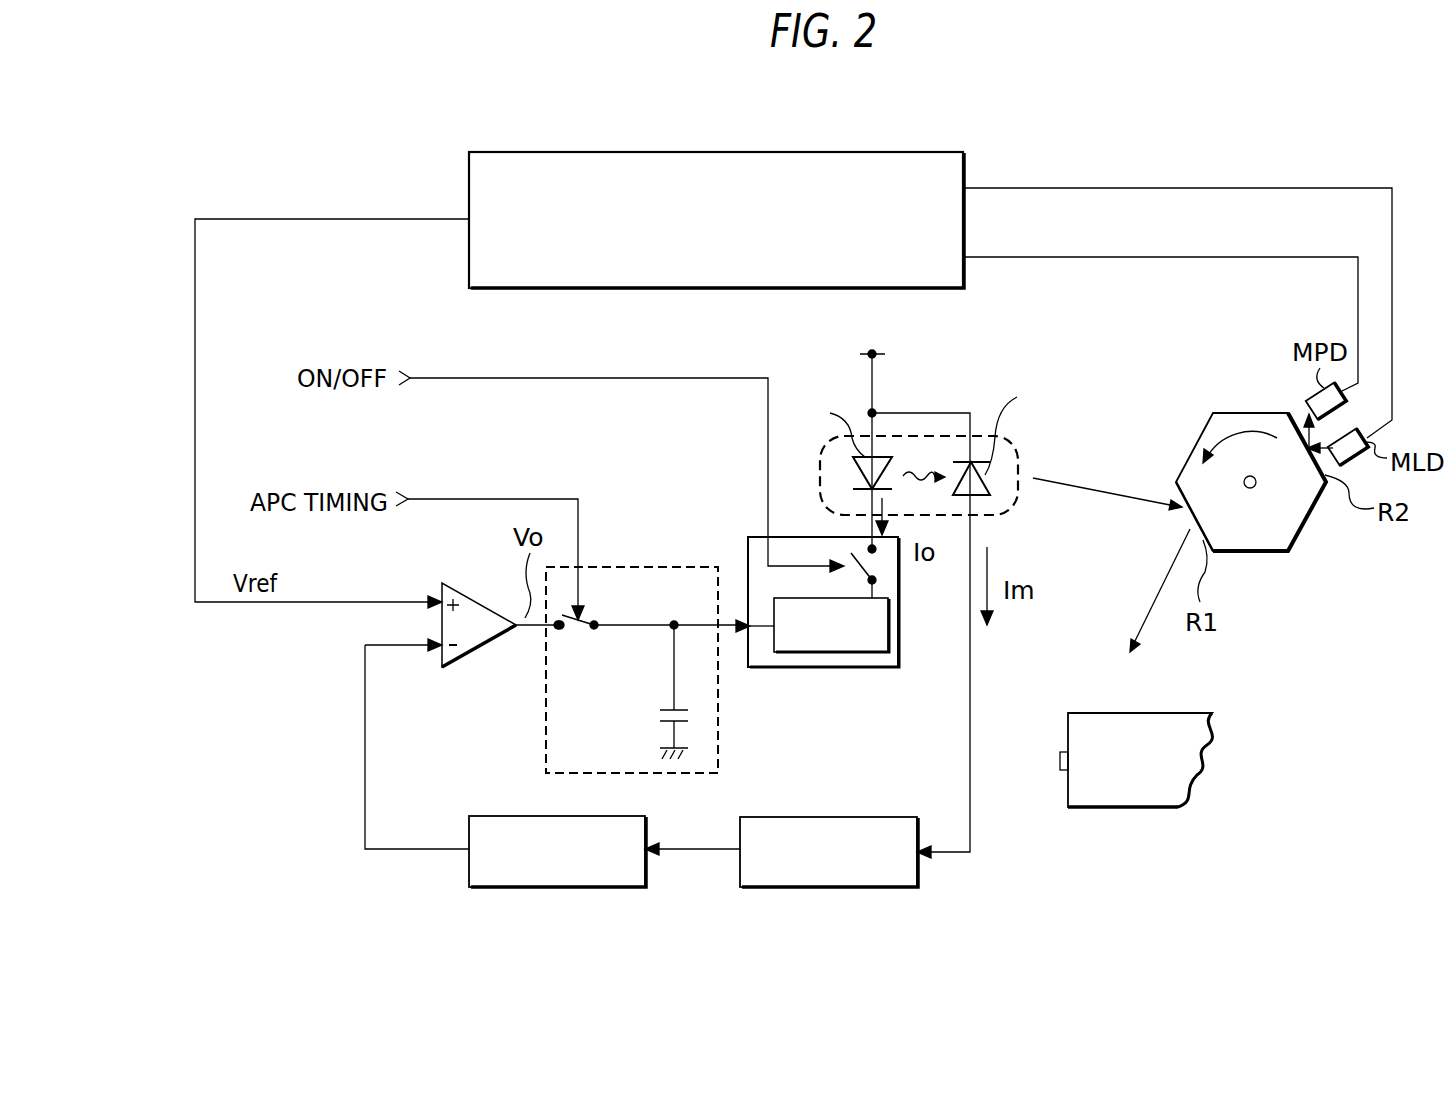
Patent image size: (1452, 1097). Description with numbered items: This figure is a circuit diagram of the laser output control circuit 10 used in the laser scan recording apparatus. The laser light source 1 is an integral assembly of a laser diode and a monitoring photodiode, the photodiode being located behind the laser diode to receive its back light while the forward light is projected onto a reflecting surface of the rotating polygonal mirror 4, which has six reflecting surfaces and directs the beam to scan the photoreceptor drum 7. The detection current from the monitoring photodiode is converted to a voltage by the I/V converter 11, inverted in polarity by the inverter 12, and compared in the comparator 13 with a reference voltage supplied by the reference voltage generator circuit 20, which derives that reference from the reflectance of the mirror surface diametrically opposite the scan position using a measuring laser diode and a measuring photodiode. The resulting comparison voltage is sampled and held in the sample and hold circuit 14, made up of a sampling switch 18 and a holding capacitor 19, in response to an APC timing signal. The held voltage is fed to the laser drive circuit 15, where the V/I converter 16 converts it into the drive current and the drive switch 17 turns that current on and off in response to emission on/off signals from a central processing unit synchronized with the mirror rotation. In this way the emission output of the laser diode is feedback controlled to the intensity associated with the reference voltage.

The laser light source 1 is at (939, 419).
The polygonal mirror 4 is at (1257, 543).
The photoreceptor drum 7 is at (1145, 795).
The laser output control circuit 10 is at (980, 390).
The I/V converter 11 is at (830, 815).
The inverter 12 is at (499, 815).
The comparator 13 is at (475, 613).
The sample and hold circuit 14 is at (622, 565).
The laser drive circuit 15 is at (851, 633).
The V/I converter 16 is at (880, 627).
The drive switch 17 is at (883, 570).
The sampling switch 18 is at (589, 633).
The holding capacitor 19 is at (657, 720).
The reference voltage generator circuit 20 is at (631, 292).